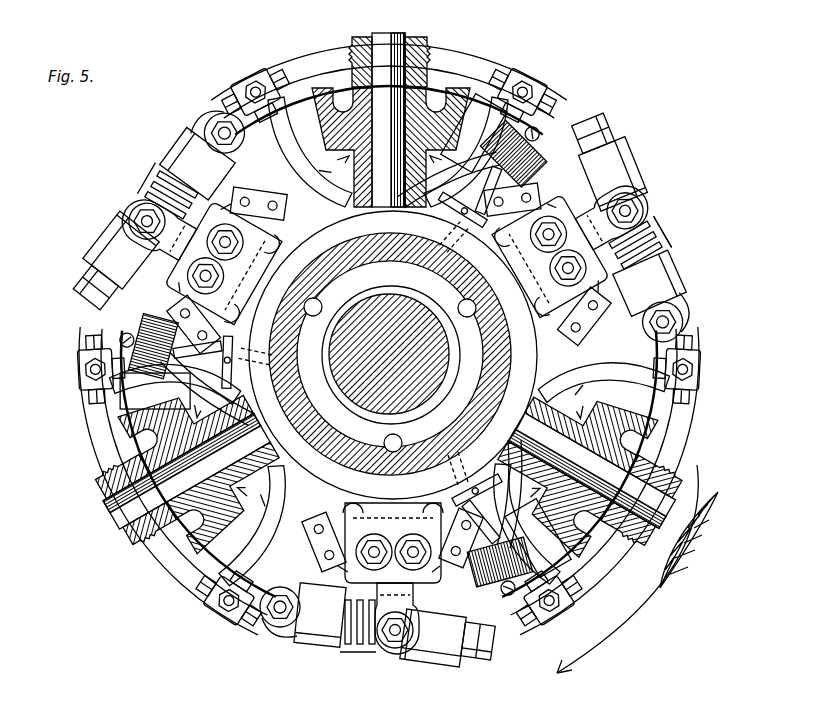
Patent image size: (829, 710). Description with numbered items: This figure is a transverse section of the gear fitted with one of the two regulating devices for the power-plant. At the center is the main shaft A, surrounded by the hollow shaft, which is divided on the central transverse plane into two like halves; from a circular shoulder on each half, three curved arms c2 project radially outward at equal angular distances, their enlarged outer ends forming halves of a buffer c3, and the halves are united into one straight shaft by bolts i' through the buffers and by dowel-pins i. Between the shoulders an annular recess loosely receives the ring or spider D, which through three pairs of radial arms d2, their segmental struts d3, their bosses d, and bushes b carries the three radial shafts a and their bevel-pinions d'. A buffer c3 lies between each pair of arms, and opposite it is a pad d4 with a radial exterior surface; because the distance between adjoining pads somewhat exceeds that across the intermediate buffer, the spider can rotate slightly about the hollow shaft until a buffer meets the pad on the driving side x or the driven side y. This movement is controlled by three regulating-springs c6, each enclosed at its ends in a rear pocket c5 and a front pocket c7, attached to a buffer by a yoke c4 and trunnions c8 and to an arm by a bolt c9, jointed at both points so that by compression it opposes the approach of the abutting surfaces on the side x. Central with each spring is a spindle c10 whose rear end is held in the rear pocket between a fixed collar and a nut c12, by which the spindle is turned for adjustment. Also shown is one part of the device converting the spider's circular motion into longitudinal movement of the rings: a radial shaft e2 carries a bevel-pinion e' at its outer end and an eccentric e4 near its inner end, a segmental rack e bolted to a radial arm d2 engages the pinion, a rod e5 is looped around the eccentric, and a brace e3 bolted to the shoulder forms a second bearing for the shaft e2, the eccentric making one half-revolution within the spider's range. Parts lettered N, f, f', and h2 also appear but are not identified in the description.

The main shaft A is at (389, 354).
The ring or spider D is at (345, 236).
The indicator mark N is at (578, 399).
The radial shaft a is at (395, 261).
The bush b is at (406, 34).
The curved arm c2 is at (431, 410).
The buffer c3 is at (363, 381).
The yoke c4 is at (436, 600).
The rear pocket c5 is at (368, 419).
The regulating-spring c6 is at (352, 658).
The front pocket c7 is at (431, 403).
The trunnion-screw c8 is at (400, 664).
The bolt c9 is at (288, 645).
The spindle c10 is at (688, 262).
The nut c12 is at (362, 393).
The boss d is at (409, 297).
The bevel-pinion d' is at (400, 232).
The radial arm d2 is at (397, 380).
The segmental strut d3 is at (355, 48).
The pad d4 is at (325, 522).
The segmental rack e is at (346, 352).
The bevel-pinion e' is at (316, 474).
The radial shaft e2 is at (358, 364).
The brace e3 is at (364, 480).
The eccentric e4 is at (484, 485).
The rod e5 is at (440, 164).
The nut f is at (463, 365).
The bolt f' is at (441, 334).
The bracket h2 is at (401, 339).
The dowel-pin i is at (454, 298).
The bolt i' is at (359, 365).
The driving side x is at (462, 431).
The driven side y is at (361, 388).